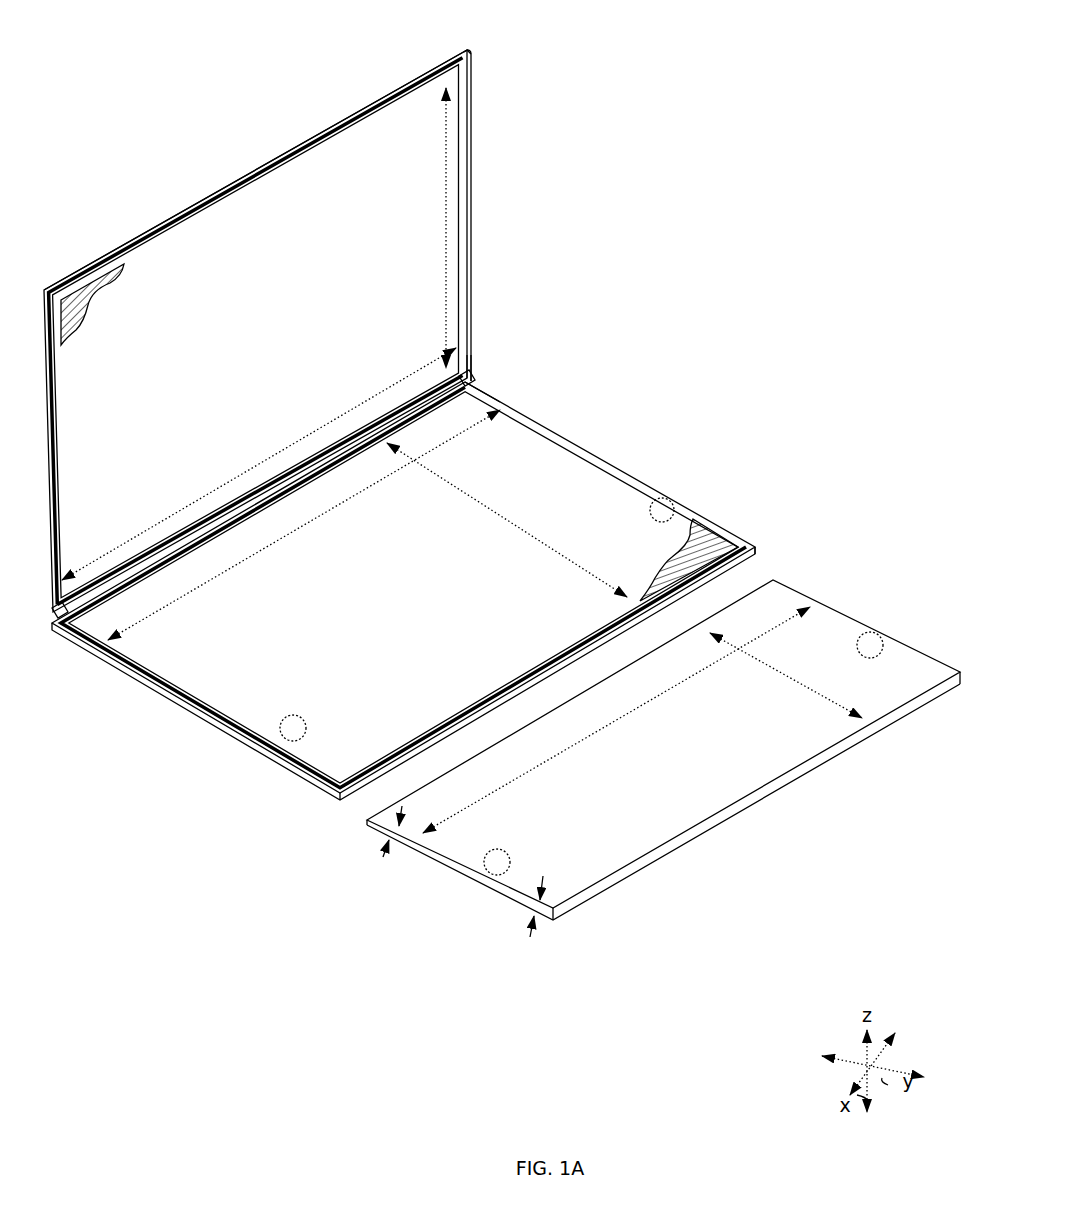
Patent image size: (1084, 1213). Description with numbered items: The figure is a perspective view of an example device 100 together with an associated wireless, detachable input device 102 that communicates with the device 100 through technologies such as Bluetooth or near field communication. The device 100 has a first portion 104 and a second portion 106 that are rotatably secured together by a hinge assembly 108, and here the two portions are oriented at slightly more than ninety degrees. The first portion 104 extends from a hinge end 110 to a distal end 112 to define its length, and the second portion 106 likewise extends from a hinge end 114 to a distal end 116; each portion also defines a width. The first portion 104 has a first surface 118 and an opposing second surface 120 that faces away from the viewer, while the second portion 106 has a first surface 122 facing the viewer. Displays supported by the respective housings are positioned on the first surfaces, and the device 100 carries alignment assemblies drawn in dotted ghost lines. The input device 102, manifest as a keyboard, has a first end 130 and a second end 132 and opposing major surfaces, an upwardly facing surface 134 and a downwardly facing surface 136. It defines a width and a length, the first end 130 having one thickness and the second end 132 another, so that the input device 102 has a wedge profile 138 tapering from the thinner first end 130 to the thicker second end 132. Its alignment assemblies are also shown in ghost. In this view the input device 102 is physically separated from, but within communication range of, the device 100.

The device 100 is at (802, 107).
The input device 102 is at (788, 803).
The first portion 104 is at (400, 75).
The second portion 106 is at (667, 480).
The hinge assembly 108 is at (482, 377).
The hinge end 110 is at (480, 375).
The distal end 112 is at (462, 50).
The hinge end 114 is at (472, 383).
The distal end 116 is at (735, 528).
The first surface 118 is at (256, 331).
The second surface 120 is at (337, 120).
The first surface 122 is at (403, 587).
The first end 130 is at (395, 797).
The second end 132 is at (574, 918).
The first surface 134 is at (447, 843).
The second surface 136 is at (622, 885).
The wedge profile 138 is at (497, 895).